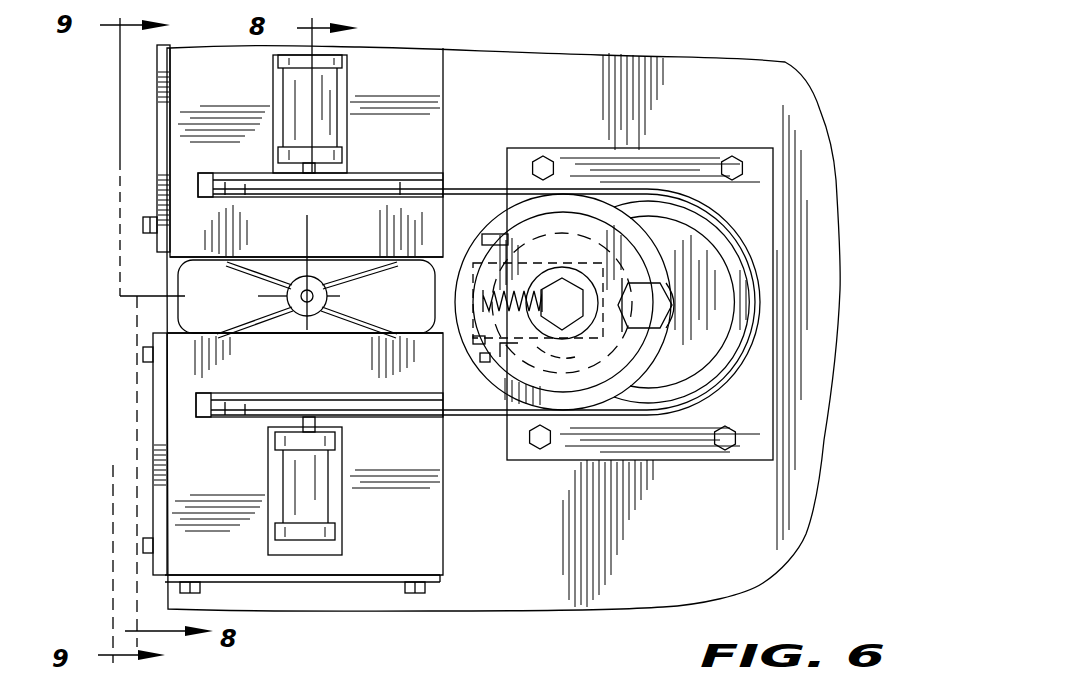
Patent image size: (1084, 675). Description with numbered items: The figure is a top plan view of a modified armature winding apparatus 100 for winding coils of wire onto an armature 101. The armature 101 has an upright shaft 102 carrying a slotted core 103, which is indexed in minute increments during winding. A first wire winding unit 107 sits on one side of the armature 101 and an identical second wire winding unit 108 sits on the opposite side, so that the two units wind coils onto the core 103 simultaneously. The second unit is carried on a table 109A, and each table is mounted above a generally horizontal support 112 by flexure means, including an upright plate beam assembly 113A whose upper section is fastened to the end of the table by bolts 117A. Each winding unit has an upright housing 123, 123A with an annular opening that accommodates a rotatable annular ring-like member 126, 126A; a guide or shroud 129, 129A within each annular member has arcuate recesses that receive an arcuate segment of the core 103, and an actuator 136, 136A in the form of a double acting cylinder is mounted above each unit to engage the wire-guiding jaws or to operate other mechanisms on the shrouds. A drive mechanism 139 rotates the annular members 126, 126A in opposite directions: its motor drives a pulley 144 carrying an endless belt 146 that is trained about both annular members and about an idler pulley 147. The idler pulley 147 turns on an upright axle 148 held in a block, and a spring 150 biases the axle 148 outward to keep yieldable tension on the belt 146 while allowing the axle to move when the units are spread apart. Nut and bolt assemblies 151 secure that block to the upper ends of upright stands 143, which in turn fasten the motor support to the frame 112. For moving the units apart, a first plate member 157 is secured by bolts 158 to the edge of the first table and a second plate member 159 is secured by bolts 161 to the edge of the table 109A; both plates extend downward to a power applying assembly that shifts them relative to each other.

The apparatus for winding coils of wire 100 is at (840, 111).
The armature 101 is at (350, 296).
The upright shaft 102 is at (321, 283).
The slotted core 103 is at (301, 278).
The first wire winding unit 107 is at (457, 112).
The second wire winding unit 108 is at (452, 553).
The table 109A is at (440, 508).
The support 112 is at (776, 545).
The first upright plate beam assembly 113A is at (388, 586).
The bolts 117A is at (190, 593).
The upright housing 123 is at (430, 228).
The upright housing 123A is at (183, 368).
The annular ring-like member 126 is at (385, 173).
The annular ring-like member 126A is at (222, 420).
The guide or shroud 129 is at (247, 272).
The guide or shroud 129A is at (262, 318).
The actuator 136 is at (325, 95).
The actuator 136A is at (315, 500).
The drive mechanism 139 is at (642, 181).
The upright stands 143 is at (512, 348).
The pulley 144 is at (717, 323).
The endless belt 146 is at (473, 418).
The idler pulley 147 is at (625, 253).
The upright axle 148 is at (566, 312).
The spring 150 is at (518, 282).
The nut and bolt assemblies 151 is at (475, 362).
The first plate member 157 is at (163, 125).
The bolts 158 is at (143, 223).
The second plate member 159 is at (158, 450).
The bolts 161 is at (143, 550).